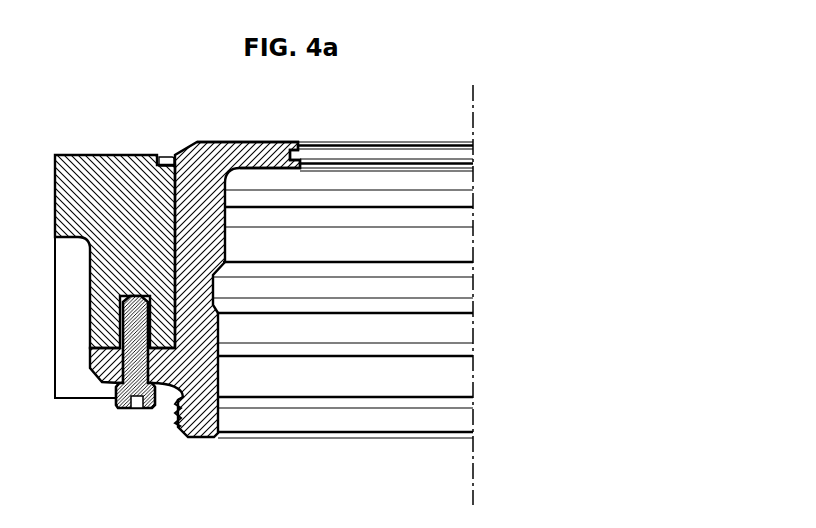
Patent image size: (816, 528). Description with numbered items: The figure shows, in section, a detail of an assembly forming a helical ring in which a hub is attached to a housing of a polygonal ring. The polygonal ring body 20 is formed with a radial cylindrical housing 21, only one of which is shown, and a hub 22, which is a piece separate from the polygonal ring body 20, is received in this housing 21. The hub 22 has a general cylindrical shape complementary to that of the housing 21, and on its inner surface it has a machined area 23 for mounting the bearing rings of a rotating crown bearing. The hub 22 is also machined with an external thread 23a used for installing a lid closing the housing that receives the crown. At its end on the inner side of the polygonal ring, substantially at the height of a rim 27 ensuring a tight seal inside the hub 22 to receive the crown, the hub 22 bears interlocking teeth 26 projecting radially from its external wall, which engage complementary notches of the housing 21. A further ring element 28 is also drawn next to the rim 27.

The polygonal ring body 20 is at (103, 180).
The radial cylindrical housing 21 is at (178, 230).
The hub 22 is at (203, 387).
The machined area 23 is at (222, 287).
The external thread 23a is at (177, 417).
The interlocking tooth 26 is at (160, 164).
The rim 27 is at (267, 158).
The sealing ring 28 is at (382, 150).